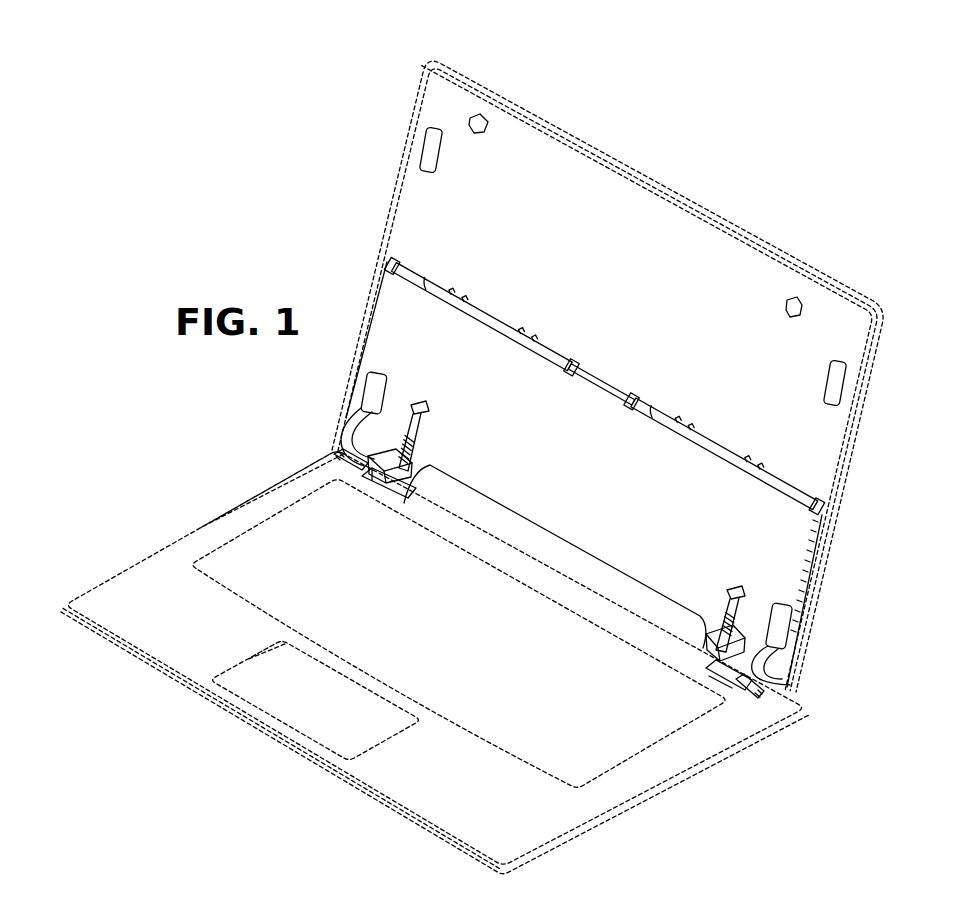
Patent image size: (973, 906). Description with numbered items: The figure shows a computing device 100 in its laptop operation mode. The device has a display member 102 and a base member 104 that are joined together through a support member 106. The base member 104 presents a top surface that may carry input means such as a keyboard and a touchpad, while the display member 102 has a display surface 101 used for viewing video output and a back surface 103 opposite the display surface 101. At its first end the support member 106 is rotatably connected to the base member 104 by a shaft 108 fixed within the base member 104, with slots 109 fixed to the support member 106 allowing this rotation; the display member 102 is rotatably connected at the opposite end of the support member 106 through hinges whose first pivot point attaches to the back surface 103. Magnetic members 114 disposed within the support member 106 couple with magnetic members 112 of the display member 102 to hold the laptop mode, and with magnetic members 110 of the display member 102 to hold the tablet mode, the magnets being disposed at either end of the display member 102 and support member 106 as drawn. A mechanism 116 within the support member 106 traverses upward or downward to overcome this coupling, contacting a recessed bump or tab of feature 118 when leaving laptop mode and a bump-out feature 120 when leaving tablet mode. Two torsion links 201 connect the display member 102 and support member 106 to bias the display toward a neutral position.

The computing device 100 is at (718, 142).
The display surface 101 is at (690, 247).
The display member 102 is at (663, 187).
The back surface 103 is at (872, 393).
The base member 104 is at (643, 800).
The support member 106 is at (603, 412).
The shaft 108 is at (343, 455).
The slots 109 is at (368, 490).
The magnetic members 110 is at (421, 145).
The magnetic members 112 is at (364, 385).
The magnetic members 114 is at (386, 385).
The mechanism 116 is at (421, 423).
The feature 118 is at (415, 453).
The feature 120 is at (473, 133).
The torsion link 201 is at (490, 316).